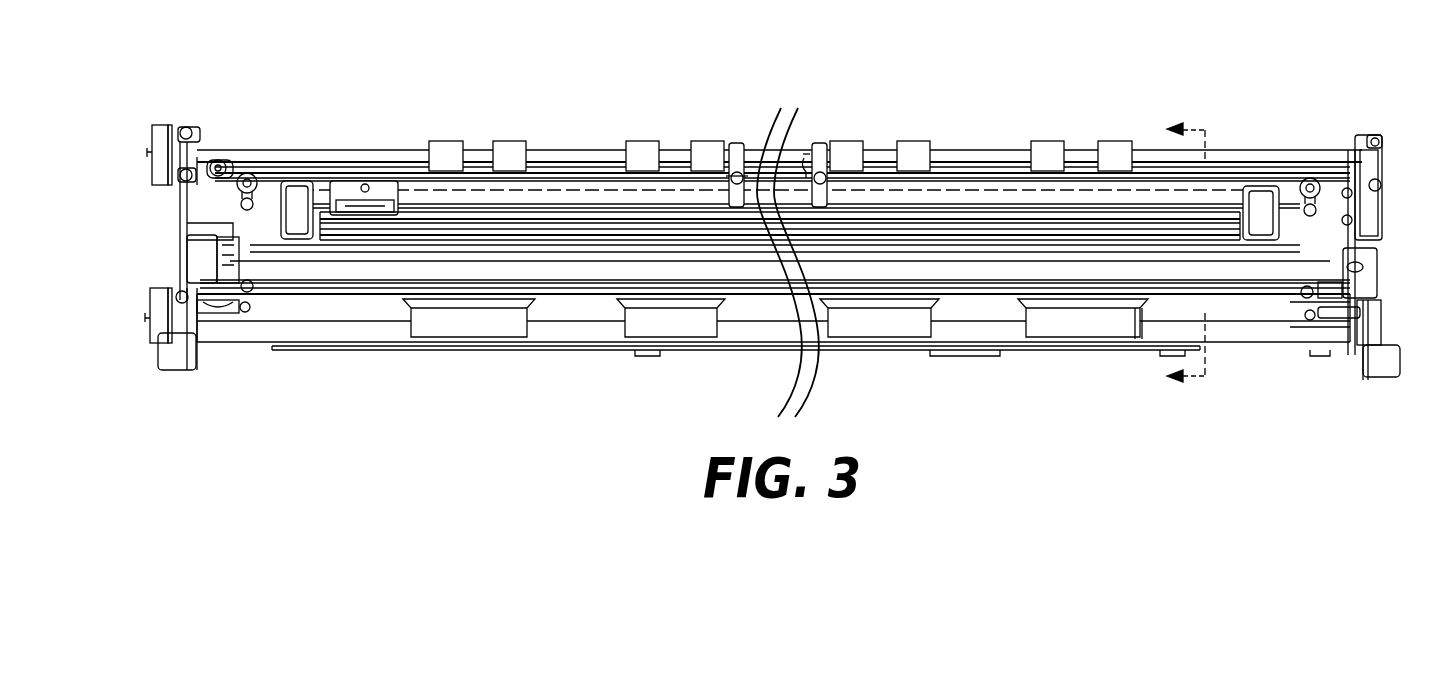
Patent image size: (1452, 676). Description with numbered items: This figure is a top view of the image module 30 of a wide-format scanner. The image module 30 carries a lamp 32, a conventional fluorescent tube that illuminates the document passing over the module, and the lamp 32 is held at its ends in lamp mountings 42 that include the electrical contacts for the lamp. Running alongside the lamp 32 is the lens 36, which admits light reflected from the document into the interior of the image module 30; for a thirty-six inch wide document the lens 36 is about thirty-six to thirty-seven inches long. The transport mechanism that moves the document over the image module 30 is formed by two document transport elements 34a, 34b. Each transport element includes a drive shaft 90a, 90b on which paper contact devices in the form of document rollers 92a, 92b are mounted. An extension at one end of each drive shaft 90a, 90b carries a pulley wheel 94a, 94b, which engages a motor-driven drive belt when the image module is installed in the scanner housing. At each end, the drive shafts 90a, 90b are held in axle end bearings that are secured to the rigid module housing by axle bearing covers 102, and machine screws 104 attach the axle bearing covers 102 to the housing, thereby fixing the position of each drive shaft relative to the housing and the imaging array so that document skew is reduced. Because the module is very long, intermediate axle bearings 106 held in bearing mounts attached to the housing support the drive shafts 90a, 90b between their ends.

The image module 30 is at (983, 86).
The lamp 32 is at (1268, 275).
The document transport element 34a is at (1337, 338).
The document transport element 34b is at (235, 149).
The lens 36 is at (1005, 231).
The lamp mountings 42 is at (228, 272).
The drive shaft 90a is at (565, 330).
The drive shaft 90b is at (558, 152).
The document rollers 92a is at (678, 330).
The document rollers 92b is at (646, 146).
The pulley wheel 94a is at (153, 338).
The pulley wheel 94b is at (157, 125).
The axle bearing covers 102 is at (1378, 165).
The machine screws 104 is at (1375, 140).
The intermediate axle bearings 106 is at (819, 146).